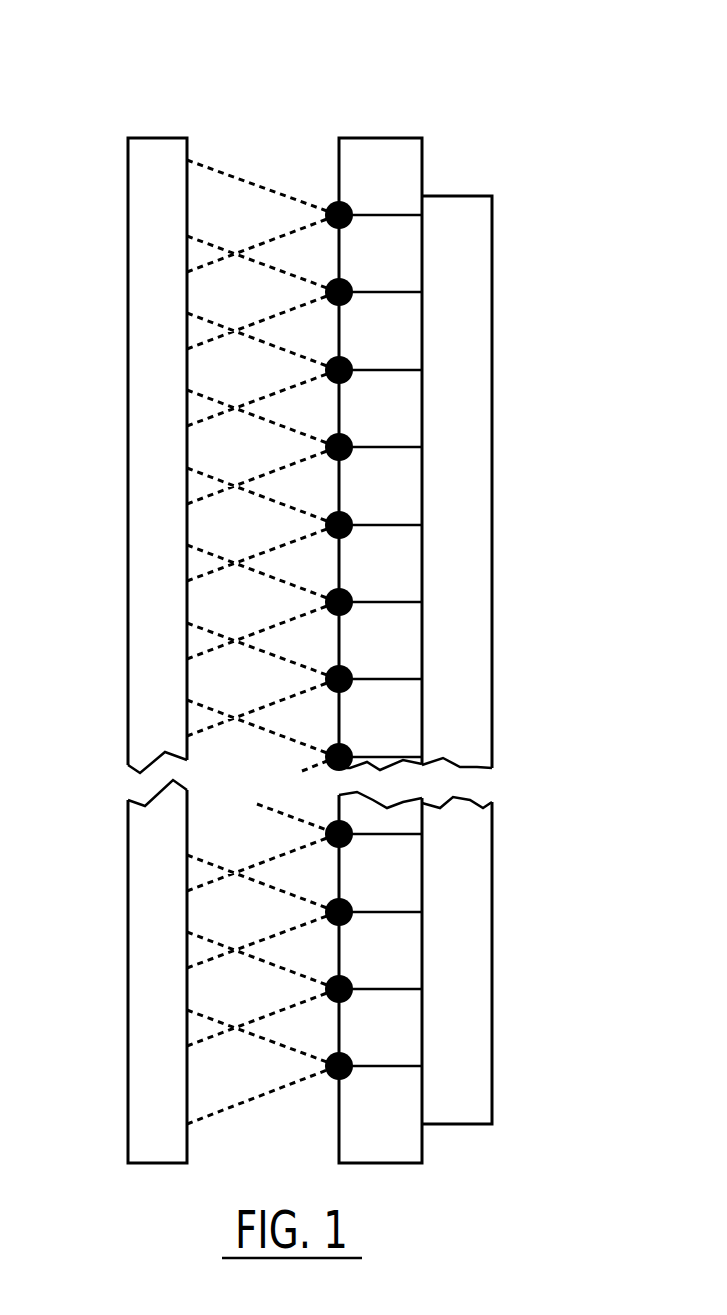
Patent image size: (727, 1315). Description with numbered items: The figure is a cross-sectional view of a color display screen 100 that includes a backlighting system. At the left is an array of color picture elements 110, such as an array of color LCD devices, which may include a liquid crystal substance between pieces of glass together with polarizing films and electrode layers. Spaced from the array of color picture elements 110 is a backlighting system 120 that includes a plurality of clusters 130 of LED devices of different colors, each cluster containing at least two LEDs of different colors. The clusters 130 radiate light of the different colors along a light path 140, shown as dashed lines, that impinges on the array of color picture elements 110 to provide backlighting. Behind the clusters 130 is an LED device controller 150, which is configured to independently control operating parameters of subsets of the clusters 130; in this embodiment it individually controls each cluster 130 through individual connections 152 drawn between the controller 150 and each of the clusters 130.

The color display screen 100 is at (185, 93).
The array of color picture elements 110 is at (128, 225).
The backlighting system 120 is at (468, 124).
The clusters of LED devices 130 is at (333, 200).
The light path 140 is at (208, 165).
The LED device controller 150 is at (453, 405).
The individual connections 152 is at (380, 292).